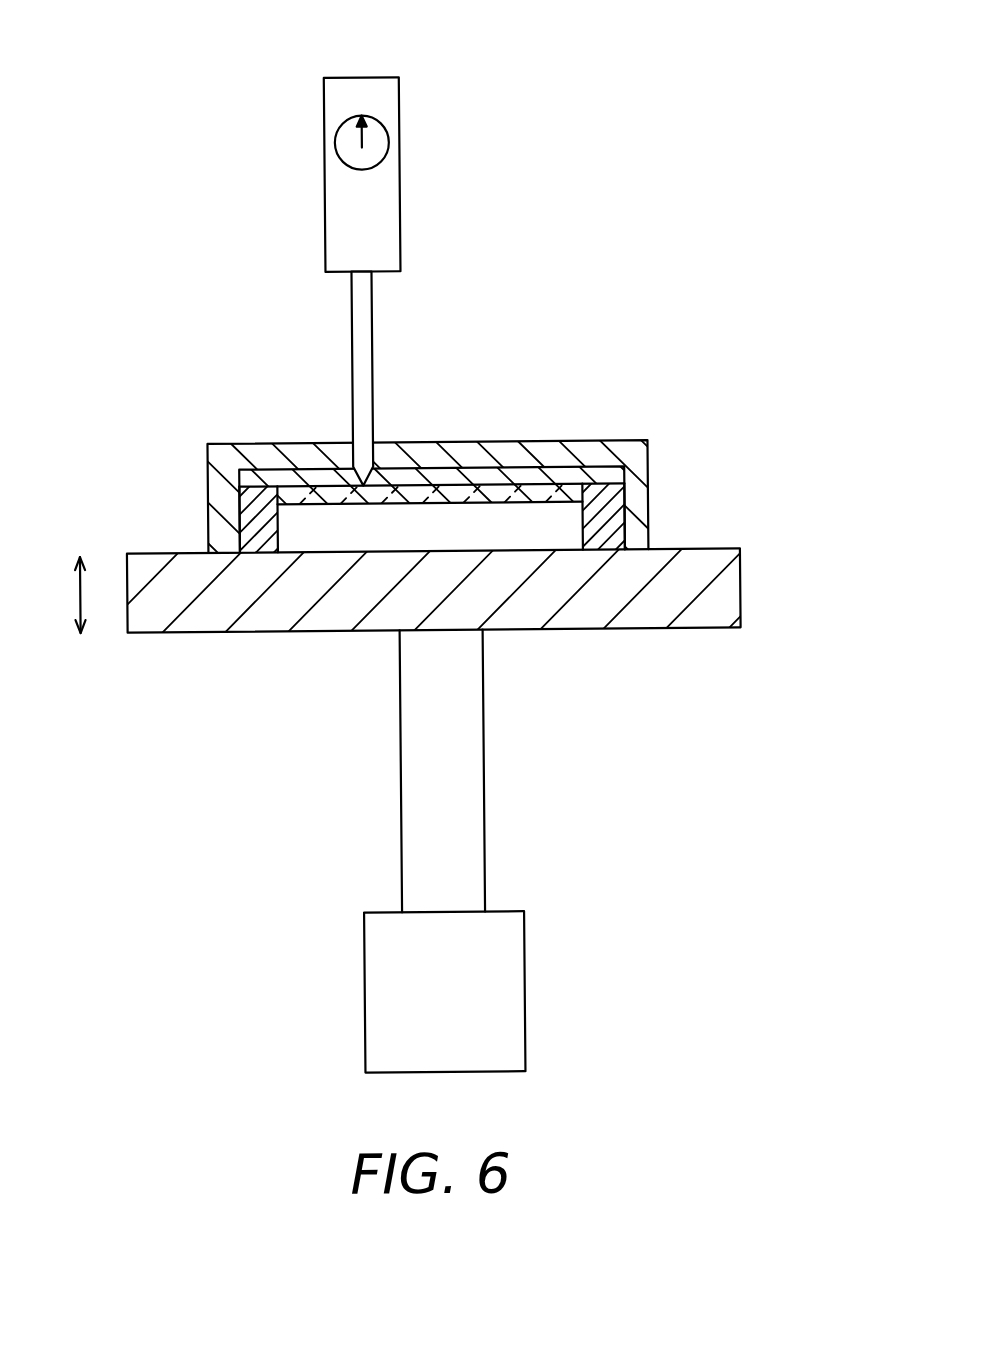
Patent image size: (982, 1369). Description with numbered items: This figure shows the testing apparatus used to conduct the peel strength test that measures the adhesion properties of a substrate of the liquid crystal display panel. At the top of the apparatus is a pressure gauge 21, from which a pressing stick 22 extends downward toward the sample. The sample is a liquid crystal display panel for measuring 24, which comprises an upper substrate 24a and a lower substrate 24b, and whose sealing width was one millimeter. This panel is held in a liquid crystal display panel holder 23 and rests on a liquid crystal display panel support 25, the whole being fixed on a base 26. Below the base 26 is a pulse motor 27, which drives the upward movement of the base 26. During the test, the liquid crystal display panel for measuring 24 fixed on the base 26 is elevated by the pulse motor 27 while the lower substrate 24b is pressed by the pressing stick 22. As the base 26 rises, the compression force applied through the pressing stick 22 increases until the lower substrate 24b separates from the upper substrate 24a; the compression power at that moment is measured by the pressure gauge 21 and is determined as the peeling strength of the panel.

The pressure gauge 21 is at (404, 106).
The pressing stick 22 is at (376, 361).
The liquid crystal display panel holder 23 is at (640, 444).
The liquid crystal display panel for measuring 24 is at (805, 408).
The upper substrate 24a is at (606, 480).
The lower substrate 24b is at (601, 522).
The liquid crystal display panel support 25 is at (258, 521).
The base 26 is at (707, 614).
The pulse motor 27 is at (504, 996).